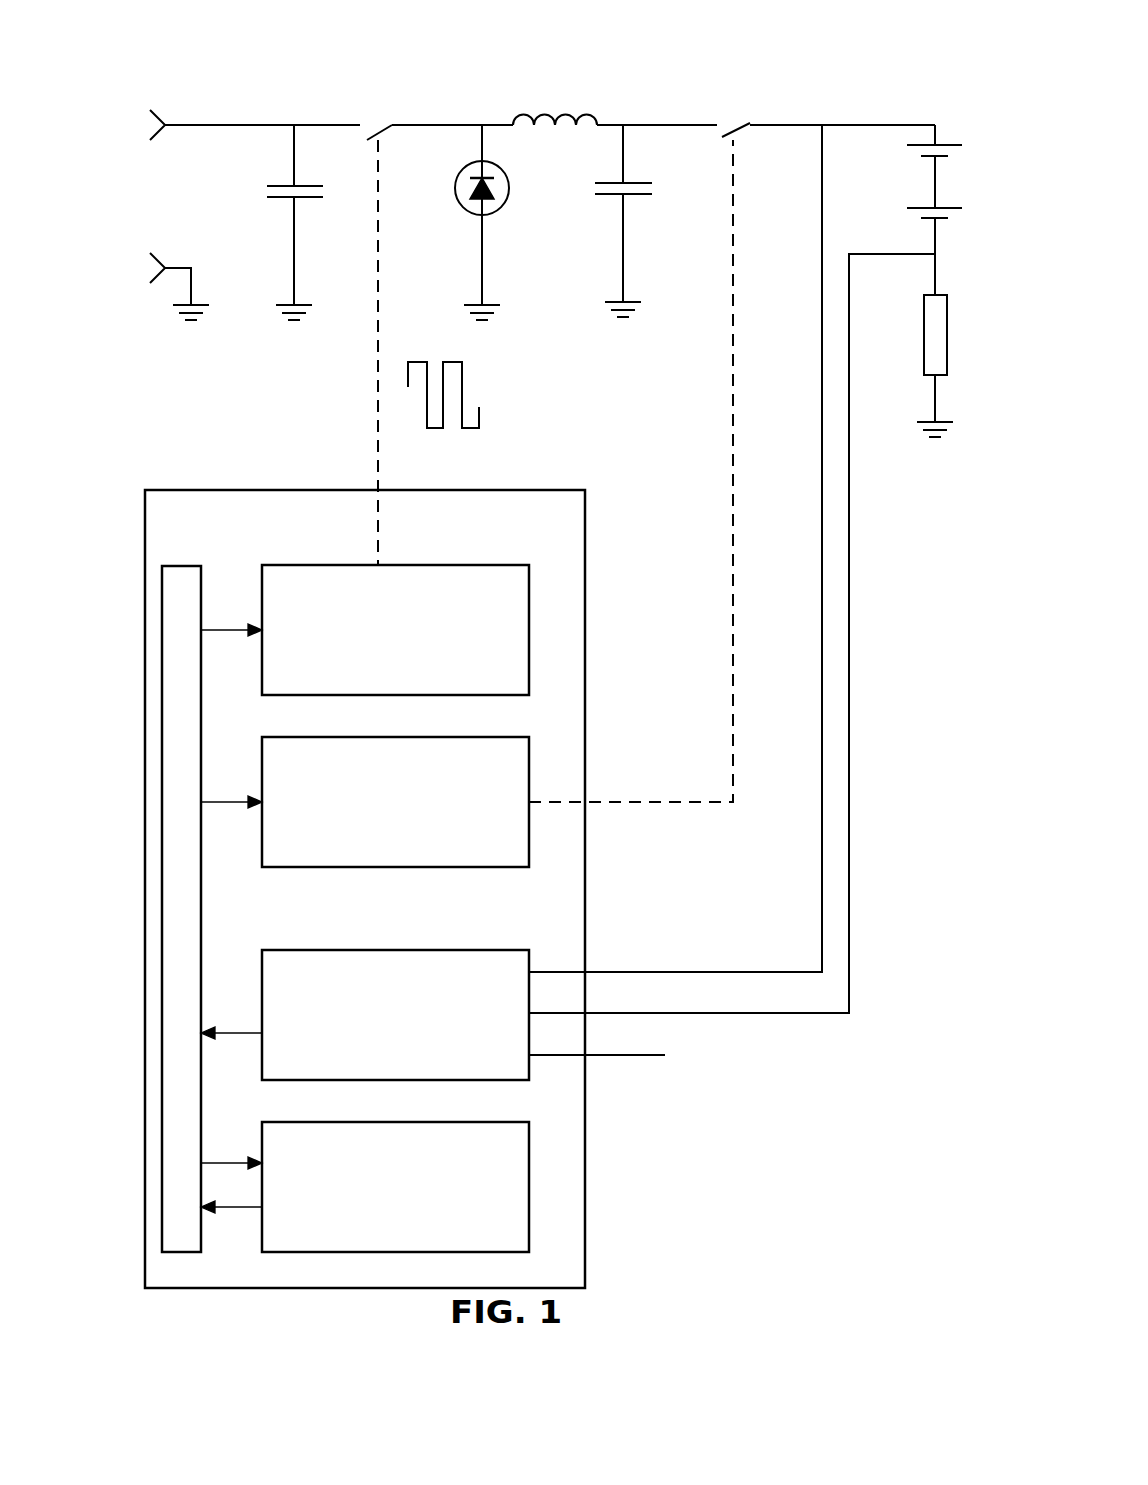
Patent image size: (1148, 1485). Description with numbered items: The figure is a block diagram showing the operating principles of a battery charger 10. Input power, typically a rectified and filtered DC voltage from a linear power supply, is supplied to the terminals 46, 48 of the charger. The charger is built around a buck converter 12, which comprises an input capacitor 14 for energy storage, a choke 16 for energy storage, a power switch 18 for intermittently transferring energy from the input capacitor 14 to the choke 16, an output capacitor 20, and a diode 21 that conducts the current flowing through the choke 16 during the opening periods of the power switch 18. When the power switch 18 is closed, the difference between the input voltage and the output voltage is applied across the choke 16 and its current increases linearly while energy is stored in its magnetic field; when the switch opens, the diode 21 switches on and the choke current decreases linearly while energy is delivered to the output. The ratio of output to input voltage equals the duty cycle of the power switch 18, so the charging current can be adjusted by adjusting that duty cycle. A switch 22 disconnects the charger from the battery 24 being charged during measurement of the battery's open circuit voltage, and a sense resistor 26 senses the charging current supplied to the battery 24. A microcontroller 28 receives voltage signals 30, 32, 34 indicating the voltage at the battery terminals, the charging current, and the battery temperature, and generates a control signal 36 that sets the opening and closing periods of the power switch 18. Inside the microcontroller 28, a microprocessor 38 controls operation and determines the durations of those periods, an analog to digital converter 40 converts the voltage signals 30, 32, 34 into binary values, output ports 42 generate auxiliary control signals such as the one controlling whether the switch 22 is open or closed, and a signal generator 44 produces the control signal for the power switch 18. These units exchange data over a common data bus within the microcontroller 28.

The battery charger 10 is at (646, 1188).
The buck converter 12 is at (611, 61).
The input capacitor 14 is at (285, 172).
The choke 16 is at (570, 108).
The power switch 18 is at (373, 117).
The output capacitor 20 is at (630, 205).
The diode 21 is at (500, 225).
The switch 22 is at (733, 118).
The battery 24 is at (922, 182).
The sense resistor 26 is at (924, 330).
The microcontroller 28 is at (145, 1020).
The voltage signal 30 is at (822, 868).
The voltage signal 32 is at (850, 862).
The voltage signal 34 is at (605, 1058).
The control signal 36 is at (380, 478).
The microprocessor 38 is at (478, 1253).
The analog to digital converter 40 is at (478, 1082).
The output ports 42 is at (470, 737).
The signal generator 44 is at (463, 565).
The terminal 46 is at (160, 260).
The terminal 48 is at (160, 118).